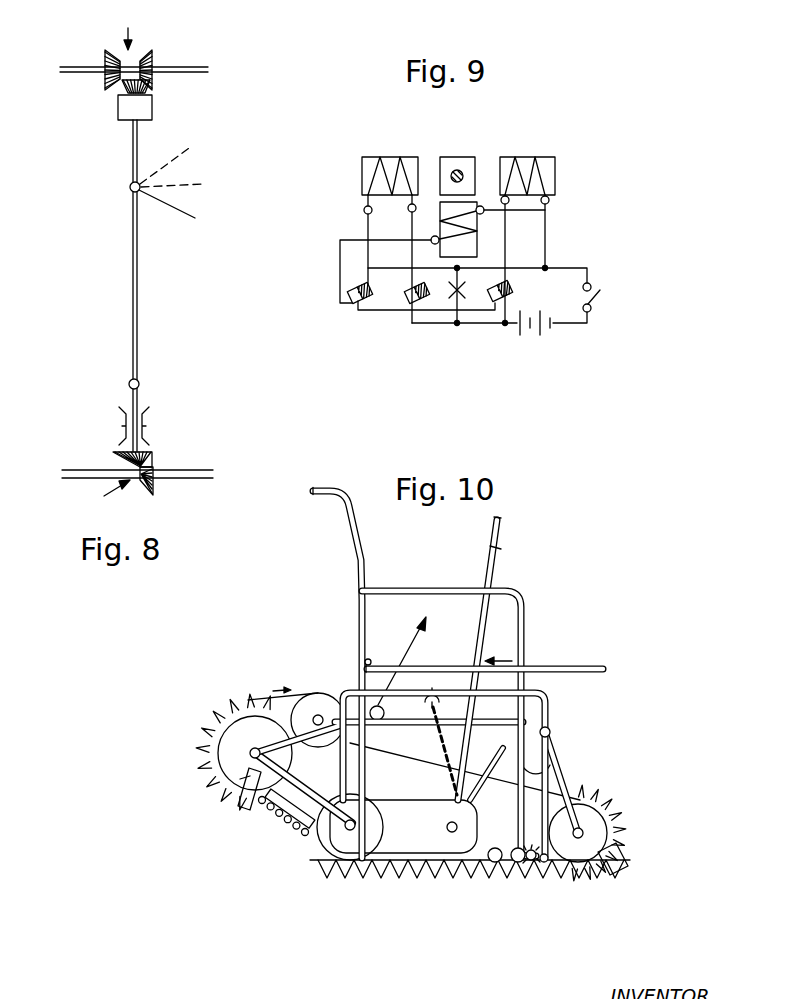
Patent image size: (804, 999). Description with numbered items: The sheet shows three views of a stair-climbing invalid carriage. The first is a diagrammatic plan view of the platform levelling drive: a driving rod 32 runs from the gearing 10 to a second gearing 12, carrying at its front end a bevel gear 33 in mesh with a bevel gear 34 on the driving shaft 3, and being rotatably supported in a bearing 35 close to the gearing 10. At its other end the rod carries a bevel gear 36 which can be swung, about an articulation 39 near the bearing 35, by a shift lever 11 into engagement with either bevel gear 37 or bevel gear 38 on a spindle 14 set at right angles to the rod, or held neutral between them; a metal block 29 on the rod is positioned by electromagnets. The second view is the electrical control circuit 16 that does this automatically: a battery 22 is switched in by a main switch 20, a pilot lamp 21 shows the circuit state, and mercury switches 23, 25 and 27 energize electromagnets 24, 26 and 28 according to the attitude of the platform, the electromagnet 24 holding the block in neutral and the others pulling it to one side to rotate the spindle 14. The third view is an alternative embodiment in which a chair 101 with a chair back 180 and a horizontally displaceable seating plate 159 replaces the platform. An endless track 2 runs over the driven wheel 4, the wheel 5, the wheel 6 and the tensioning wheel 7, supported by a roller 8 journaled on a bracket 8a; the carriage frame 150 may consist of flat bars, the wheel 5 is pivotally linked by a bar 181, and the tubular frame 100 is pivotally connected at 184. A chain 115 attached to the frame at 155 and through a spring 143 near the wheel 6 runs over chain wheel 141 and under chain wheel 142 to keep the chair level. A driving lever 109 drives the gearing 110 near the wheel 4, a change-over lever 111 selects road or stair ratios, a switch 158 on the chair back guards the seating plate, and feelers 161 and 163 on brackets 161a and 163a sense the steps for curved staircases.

In FIG. 8, the spindle 14 is at (187, 66).
In FIG. 8, the bevel gear 37 is at (106, 55).
In FIG. 8, the bevel gear 38 is at (150, 55).
In FIG. 8, the second gearing 12 is at (127, 28).
In FIG. 8, the bevel gear 36 is at (123, 89).
In FIG. 8, the metal block 29 is at (126, 119).
In FIG. 9, the metal block 29 is at (462, 157).
In FIG. 8, the driving rod 32 is at (139, 278).
In FIG. 9, the driving rod 32 is at (453, 171).
In FIG. 8, the shift lever 11 is at (172, 213).
In FIG. 8, the articulation 39 is at (139, 383).
In FIG. 8, the bearing 35 is at (121, 426).
In FIG. 8, the bevel gear 33 is at (148, 452).
In FIG. 8, the driving shaft 3 is at (192, 474).
In FIG. 10, the driving shaft 3 is at (345, 829).
In FIG. 8, the bevel gear 34 is at (152, 488).
In FIG. 8, the gearing 10 is at (105, 495).
In FIG. 9, the electromagnet 28 is at (392, 157).
In FIG. 9, the electromagnet 26 is at (530, 157).
In FIG. 9, the electromagnet 24 is at (449, 256).
In FIG. 9, the electrical control circuit 16 is at (474, 334).
In FIG. 9, the mercury switch 23 is at (369, 290).
In FIG. 9, the mercury switch 27 is at (424, 290).
In FIG. 9, the pilot lamp 21 is at (464, 290).
In FIG. 9, the mercury switch 25 is at (511, 289).
In FIG. 9, the main switch 20 is at (597, 295).
In FIG. 9, the battery 22 is at (548, 328).
In FIG. 10, the wheel 5 is at (227, 767).
In FIG. 10, the endless track 2 is at (443, 868).
In FIG. 10, the wheel 6 is at (580, 854).
In FIG. 10, the feeler 161 is at (612, 872).
In FIG. 10, the bracket 161a is at (587, 842).
In FIG. 10, the gearing 110 is at (393, 835).
In FIG. 10, the driven wheel 4 is at (336, 854).
In FIG. 10, the tensioning wheel 7 is at (318, 700).
In FIG. 10, the feeler 163 is at (243, 800).
In FIG. 10, the bracket 163a is at (247, 777).
In FIG. 10, the roller 8 is at (282, 812).
In FIG. 10, the bar 181 is at (264, 806).
In FIG. 10, the bracket 8a is at (327, 790).
In FIG. 10, the carriage frame 150 is at (297, 742).
In FIG. 10, the driving lever 109 is at (494, 560).
In FIG. 10, the change-over lever 111 is at (484, 782).
In FIG. 10, the chain 115 is at (452, 765).
In FIG. 10, the chain attachment 155 is at (432, 688).
In FIG. 10, the switch 158 is at (397, 661).
In FIG. 10, the chair back 180 is at (352, 553).
In FIG. 10, the chair 101 is at (428, 588).
In FIG. 10, the tubular frame 100 is at (549, 710).
In FIG. 10, the seating plate 159 is at (558, 668).
In FIG. 10, the pivot connection 184 is at (551, 732).
In FIG. 10, the chain wheel 142 is at (492, 866).
In FIG. 10, the chain wheel 141 is at (530, 866).
In FIG. 10, the spring 143 is at (546, 864).